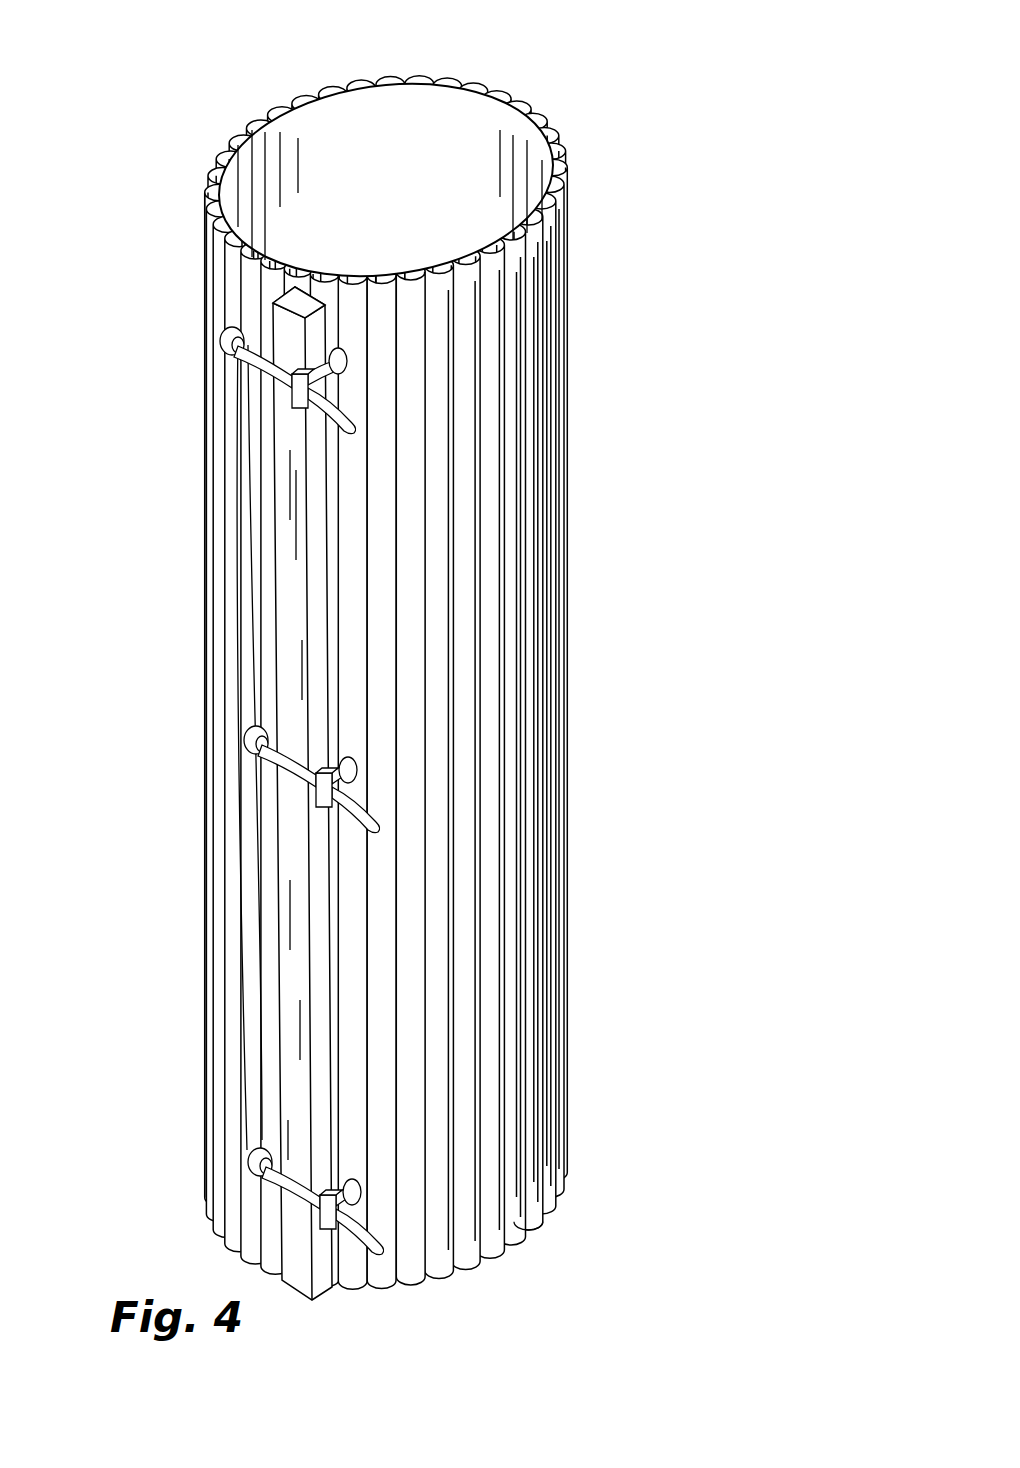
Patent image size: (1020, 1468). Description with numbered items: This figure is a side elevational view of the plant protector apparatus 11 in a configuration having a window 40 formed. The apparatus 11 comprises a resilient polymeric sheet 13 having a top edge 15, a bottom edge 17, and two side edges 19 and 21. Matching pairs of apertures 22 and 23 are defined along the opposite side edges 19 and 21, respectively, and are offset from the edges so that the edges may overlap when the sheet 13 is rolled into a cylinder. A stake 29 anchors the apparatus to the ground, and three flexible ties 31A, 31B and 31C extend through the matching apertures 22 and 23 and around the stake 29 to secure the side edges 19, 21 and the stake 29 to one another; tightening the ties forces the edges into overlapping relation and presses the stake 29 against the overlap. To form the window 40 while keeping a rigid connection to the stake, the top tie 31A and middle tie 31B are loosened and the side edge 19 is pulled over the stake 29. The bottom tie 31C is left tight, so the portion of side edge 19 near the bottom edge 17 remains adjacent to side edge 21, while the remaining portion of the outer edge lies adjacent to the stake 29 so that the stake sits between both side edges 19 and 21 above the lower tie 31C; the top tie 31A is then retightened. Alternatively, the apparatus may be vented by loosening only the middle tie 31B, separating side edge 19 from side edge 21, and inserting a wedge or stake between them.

The plant protector apparatus 11 is at (386, 687).
The resilient polymeric sheet 13 is at (570, 728).
The top edge 15 is at (497, 95).
The bottom edge 17 is at (538, 1243).
The side edge 19 is at (200, 305).
The side edge 21 is at (268, 283).
The aperture 22 is at (145, 343).
The aperture 23 is at (471, 366).
The stake 29 is at (288, 572).
The top tie 31A is at (341, 380).
The middle tie 31B is at (300, 778).
The bottom tie 31C is at (295, 1197).
The window 40 is at (275, 958).